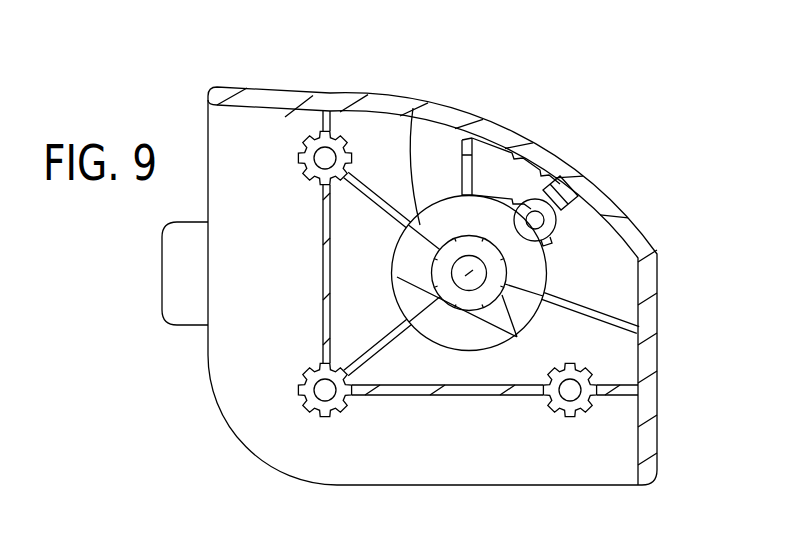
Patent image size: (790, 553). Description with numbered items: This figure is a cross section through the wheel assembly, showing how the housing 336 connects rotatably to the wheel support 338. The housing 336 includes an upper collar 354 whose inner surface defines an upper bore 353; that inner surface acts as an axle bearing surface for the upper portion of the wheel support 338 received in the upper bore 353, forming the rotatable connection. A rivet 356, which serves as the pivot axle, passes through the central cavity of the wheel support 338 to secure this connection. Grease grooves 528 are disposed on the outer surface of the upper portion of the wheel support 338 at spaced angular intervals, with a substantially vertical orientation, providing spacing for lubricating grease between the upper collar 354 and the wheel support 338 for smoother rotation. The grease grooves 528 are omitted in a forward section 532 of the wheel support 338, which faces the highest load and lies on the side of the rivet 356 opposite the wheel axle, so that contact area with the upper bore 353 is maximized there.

The housing 336 is at (457, 142).
The wheel support 338 is at (471, 310).
The upper bore 353 is at (480, 201).
The upper collar 354 is at (488, 212).
The rivet 356 is at (432, 273).
The grease grooves 528 is at (485, 242).
The forward section 532 is at (487, 271).